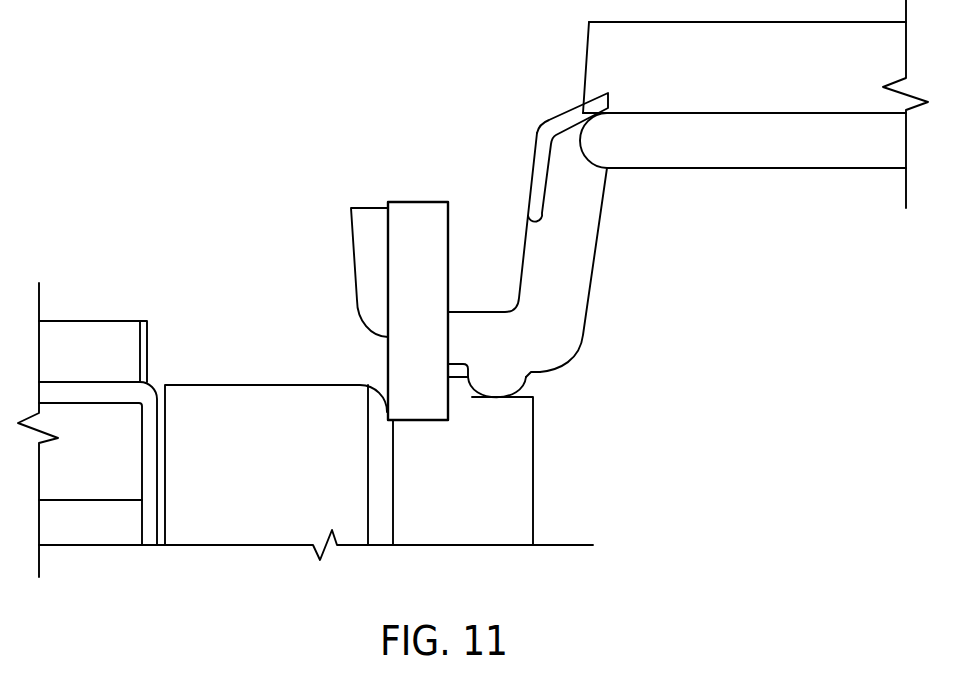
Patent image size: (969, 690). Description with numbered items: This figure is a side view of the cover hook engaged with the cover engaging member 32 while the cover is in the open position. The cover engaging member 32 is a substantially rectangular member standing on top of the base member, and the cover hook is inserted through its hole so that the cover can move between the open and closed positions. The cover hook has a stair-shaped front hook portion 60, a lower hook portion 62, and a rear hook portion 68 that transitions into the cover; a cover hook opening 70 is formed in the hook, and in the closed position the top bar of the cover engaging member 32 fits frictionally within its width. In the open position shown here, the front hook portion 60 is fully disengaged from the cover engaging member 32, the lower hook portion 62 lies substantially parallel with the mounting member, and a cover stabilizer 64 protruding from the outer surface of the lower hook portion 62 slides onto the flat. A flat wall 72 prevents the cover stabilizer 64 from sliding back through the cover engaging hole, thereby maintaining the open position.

The cover engaging member 32 is at (398, 260).
The front hook portion 60 is at (367, 295).
The lower hook portion 62 is at (512, 345).
The cover stabilizer 64 is at (507, 382).
The rear hook portion 68 is at (577, 253).
The cover hook opening 70 is at (481, 278).
The flat wall 72 is at (472, 397).